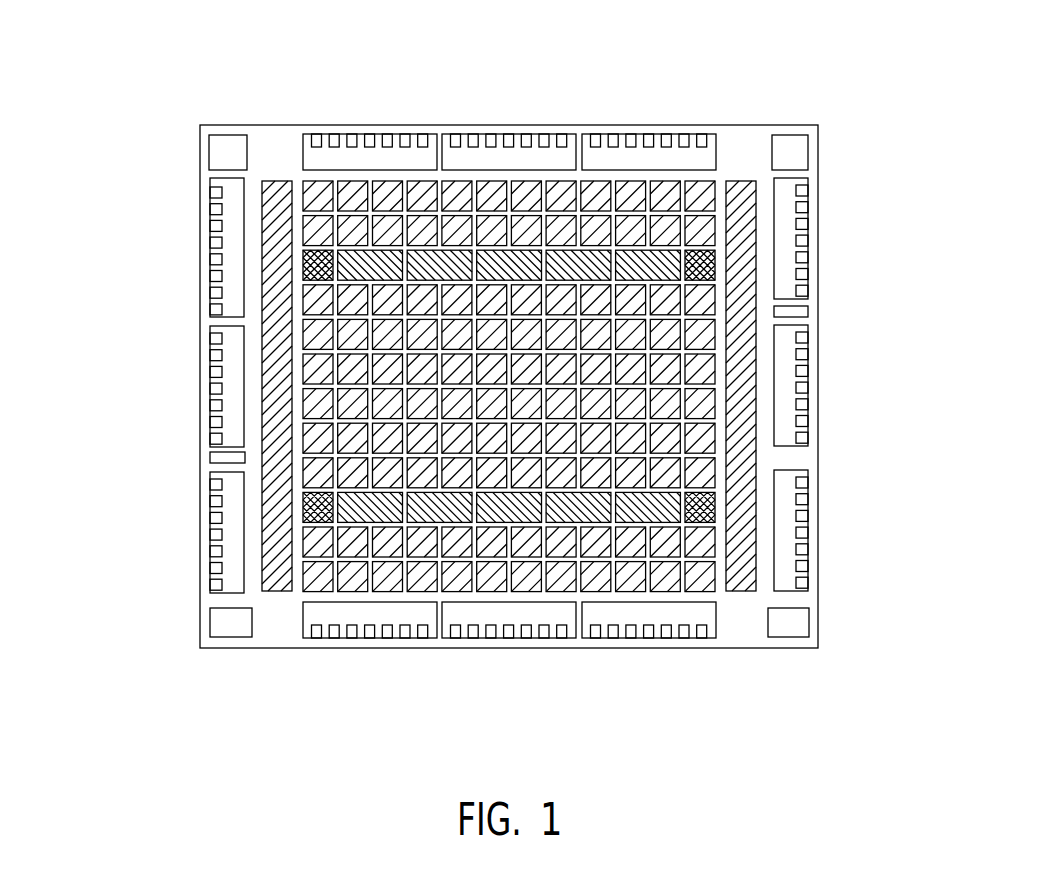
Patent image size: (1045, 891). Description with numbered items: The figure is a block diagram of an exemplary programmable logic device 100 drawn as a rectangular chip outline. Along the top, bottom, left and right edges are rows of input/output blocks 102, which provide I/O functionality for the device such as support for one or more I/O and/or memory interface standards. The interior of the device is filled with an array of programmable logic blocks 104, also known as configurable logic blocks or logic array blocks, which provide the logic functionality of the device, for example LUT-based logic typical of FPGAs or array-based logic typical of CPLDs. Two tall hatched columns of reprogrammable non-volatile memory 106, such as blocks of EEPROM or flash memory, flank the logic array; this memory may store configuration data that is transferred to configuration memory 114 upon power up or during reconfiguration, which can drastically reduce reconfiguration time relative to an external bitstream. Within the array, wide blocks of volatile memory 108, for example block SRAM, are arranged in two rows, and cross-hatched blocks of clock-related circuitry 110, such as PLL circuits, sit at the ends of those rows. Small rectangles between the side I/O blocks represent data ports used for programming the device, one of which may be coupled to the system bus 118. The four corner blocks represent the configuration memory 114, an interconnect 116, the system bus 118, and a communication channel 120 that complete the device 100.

The programmable logic device 100 is at (124, 164).
The input/output blocks 102 is at (302, 158).
The programmable logic blocks 104 is at (318, 336).
The reprogrammable non-volatile memory 106 is at (753, 183).
The volatile memory 108 is at (665, 250).
The clock-related circuitry 110 is at (712, 265).
The configuration memory 114 is at (218, 622).
The interconnect 116 is at (802, 623).
The system bus 118 is at (227, 143).
The communication channel 120 is at (790, 143).